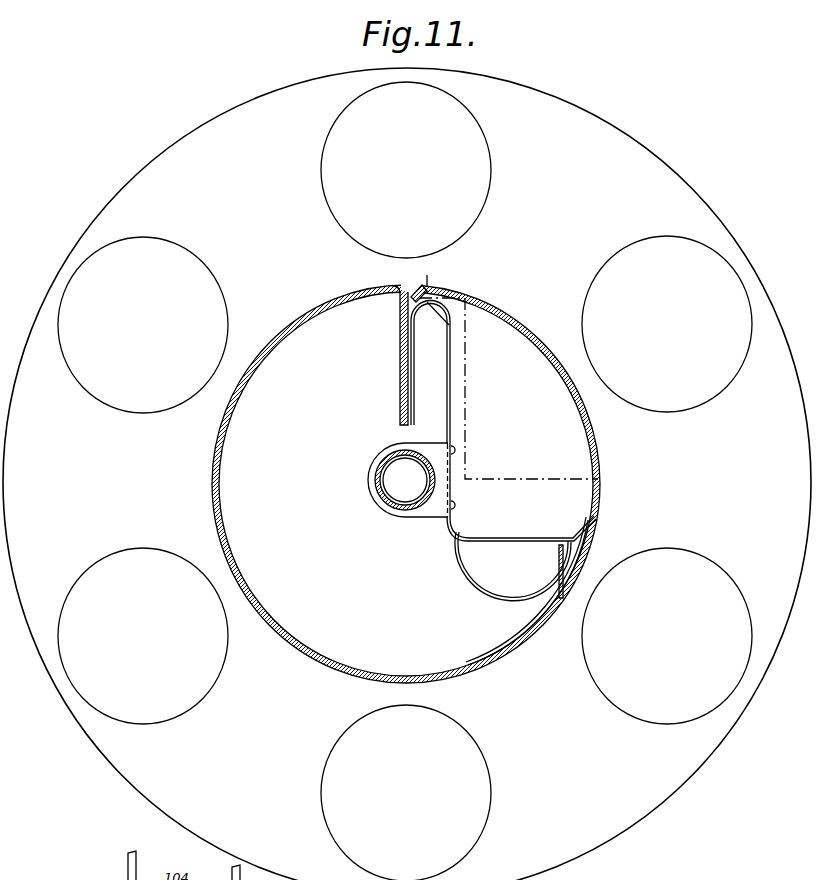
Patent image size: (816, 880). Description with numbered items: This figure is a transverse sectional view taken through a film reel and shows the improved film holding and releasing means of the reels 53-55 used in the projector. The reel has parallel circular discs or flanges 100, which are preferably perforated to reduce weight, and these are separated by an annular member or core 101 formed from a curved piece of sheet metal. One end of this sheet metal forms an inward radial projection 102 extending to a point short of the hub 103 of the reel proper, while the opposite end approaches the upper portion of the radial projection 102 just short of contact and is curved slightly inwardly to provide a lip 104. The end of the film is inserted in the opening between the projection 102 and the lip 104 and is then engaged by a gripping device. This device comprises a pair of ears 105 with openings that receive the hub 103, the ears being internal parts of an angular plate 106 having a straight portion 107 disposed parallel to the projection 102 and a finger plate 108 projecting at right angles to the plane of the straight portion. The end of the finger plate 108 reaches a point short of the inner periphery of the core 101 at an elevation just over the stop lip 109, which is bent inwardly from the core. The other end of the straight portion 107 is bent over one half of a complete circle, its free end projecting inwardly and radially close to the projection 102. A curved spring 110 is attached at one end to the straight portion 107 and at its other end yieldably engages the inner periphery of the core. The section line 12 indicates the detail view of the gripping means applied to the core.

The parallel circular discs or flanges 100 is at (677, 173).
The reels 53-55 is at (108, 205).
The annular member or core 101 is at (221, 443).
The inward radial projection 102 is at (401, 366).
The hub 103 is at (405, 480).
The lip 104 is at (450, 323).
The ears 105 is at (433, 512).
The angular plate 106 is at (463, 501).
The straight portion 107 is at (451, 393).
The finger plate 108 is at (525, 536).
The stop lip 109 is at (559, 561).
The curved spring 110 is at (482, 583).
The section line 12- 12 is at (427, 262).